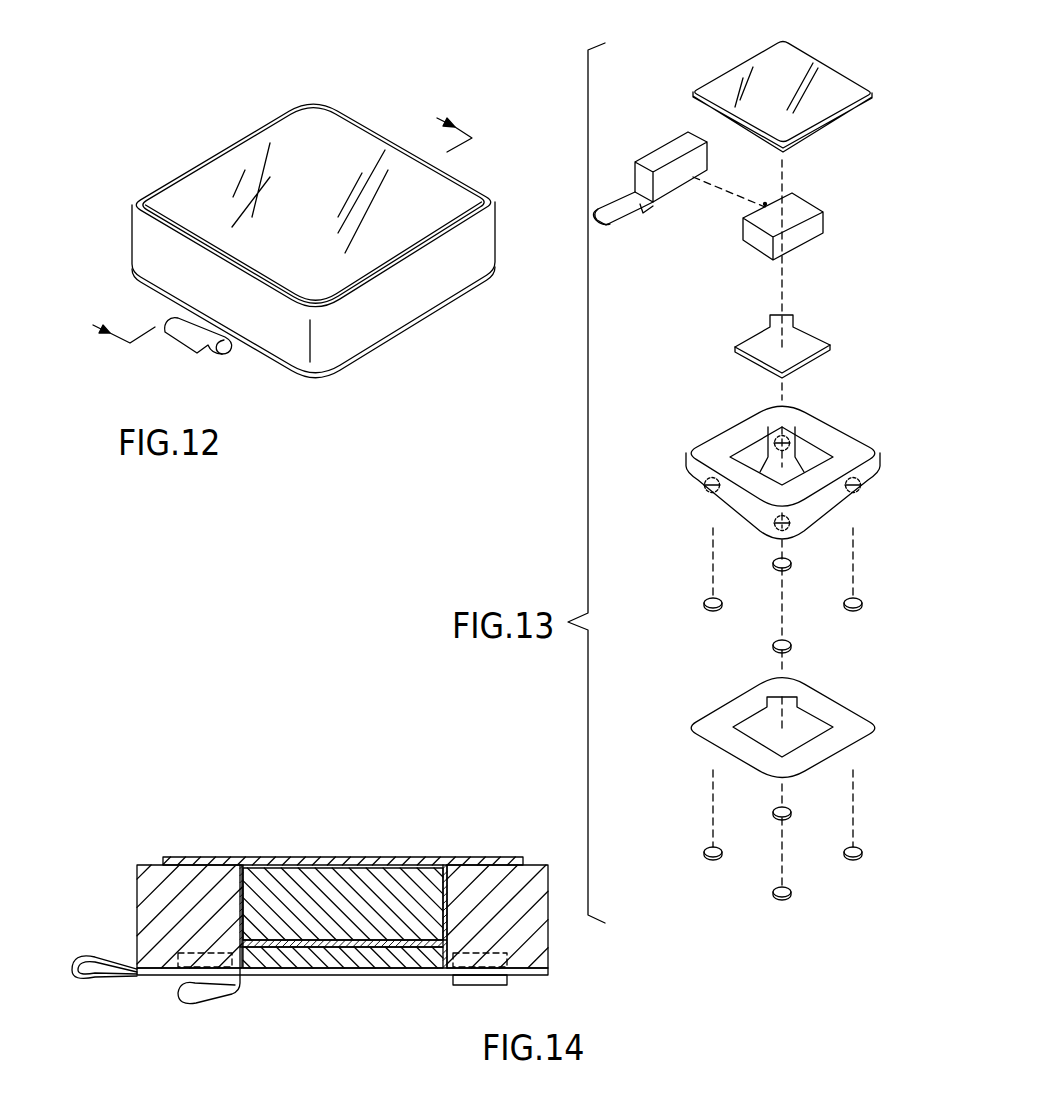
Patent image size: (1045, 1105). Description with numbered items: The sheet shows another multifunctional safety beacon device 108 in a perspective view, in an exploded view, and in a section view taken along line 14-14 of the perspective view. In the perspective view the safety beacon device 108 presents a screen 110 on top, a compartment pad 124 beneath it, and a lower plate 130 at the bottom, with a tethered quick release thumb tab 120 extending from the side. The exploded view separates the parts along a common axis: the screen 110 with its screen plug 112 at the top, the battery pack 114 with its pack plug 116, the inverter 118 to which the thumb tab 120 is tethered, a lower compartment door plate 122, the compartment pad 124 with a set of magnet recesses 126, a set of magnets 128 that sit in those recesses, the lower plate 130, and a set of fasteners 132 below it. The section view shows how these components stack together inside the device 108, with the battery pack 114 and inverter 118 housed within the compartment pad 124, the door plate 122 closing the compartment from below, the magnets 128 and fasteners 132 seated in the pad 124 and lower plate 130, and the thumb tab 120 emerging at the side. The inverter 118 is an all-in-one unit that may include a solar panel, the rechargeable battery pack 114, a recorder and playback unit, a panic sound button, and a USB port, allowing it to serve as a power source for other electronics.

In FIG. 12, the multifunctional safety beacon device 108 is at (210, 105).
In FIG. 12, the screen 110 is at (327, 120).
In FIG. 13, the screen 110 is at (807, 63).
In FIG. 14, the screen 110 is at (435, 860).
In FIG. 13, the screen plug 112 is at (763, 78).
In FIG. 13, the battery pack 114 is at (800, 203).
In FIG. 14, the battery pack 114 is at (345, 876).
In FIG. 13, the pack plug 116 is at (765, 203).
In FIG. 13, the inverter 118 is at (673, 147).
In FIG. 14, the inverter 118 is at (330, 862).
In FIG. 12, the tethered quick release thumb tab 120 is at (185, 340).
In FIG. 13, the tethered quick release thumb tab 120 is at (613, 222).
In FIG. 14, the tethered quick release thumb tab 120 is at (70, 960).
In FIG. 13, the lower compartment door plate 122 is at (803, 338).
In FIG. 14, the lower compartment door plate 122 is at (298, 962).
In FIG. 12, the compartment pad 124 is at (433, 298).
In FIG. 13, the compartment pad 124 is at (822, 430).
In FIG. 14, the compartment pad 124 is at (342, 916).
In FIG. 13, the magnet recesses 126 is at (690, 482).
In FIG. 13, the magnets 128 is at (712, 612).
In FIG. 14, the magnets 128 is at (165, 968).
In FIG. 12, the lower plate 130 is at (393, 337).
In FIG. 13, the lower plate 130 is at (820, 702).
In FIG. 14, the lower plate 130 is at (342, 971).
In FIG. 13, the fasteners 132 is at (712, 862).
In FIG. 14, the fasteners 132 is at (475, 980).
In FIG. 12, the section line 14- 14 is at (272, 221).